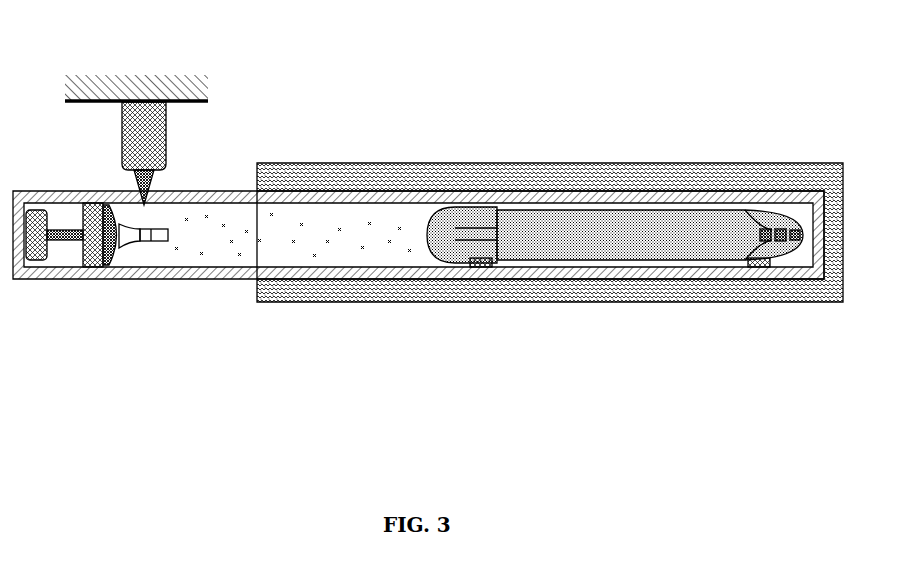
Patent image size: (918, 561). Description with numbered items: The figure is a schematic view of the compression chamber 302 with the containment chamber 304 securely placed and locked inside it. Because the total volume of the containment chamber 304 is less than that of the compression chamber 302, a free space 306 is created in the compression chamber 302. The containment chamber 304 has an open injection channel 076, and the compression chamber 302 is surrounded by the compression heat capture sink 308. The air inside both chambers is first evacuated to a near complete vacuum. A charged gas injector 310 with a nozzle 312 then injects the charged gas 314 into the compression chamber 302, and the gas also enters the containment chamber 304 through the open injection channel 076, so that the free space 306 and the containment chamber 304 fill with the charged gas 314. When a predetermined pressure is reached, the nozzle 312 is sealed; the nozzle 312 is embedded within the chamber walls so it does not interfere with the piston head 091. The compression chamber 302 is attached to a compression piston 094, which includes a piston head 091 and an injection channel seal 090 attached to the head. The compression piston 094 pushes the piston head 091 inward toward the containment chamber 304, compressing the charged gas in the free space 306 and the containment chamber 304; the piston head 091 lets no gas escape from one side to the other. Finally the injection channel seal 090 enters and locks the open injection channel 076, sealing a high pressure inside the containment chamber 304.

The charged gas injector 310 is at (153, 150).
The nozzle 312 is at (134, 184).
The compression chamber 302 is at (297, 197).
The free space 306 is at (393, 222).
The open injection channel 076 is at (442, 232).
The compression heat capture sink 308 is at (543, 184).
The compression piston 094 is at (67, 241).
The piston head 091 is at (94, 262).
The injection channel seal 090 is at (143, 240).
The containment chamber 304 is at (447, 272).
The charged gas 314 is at (267, 243).